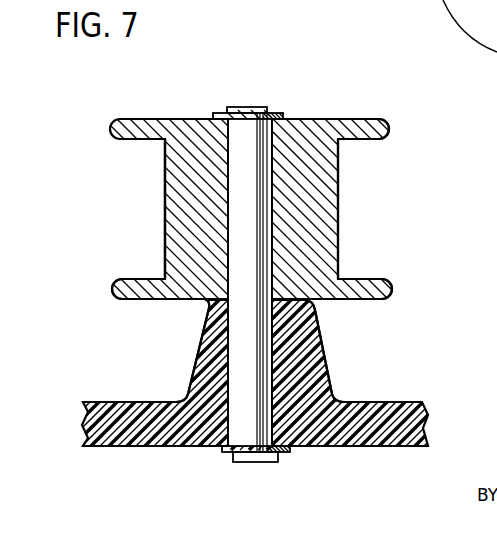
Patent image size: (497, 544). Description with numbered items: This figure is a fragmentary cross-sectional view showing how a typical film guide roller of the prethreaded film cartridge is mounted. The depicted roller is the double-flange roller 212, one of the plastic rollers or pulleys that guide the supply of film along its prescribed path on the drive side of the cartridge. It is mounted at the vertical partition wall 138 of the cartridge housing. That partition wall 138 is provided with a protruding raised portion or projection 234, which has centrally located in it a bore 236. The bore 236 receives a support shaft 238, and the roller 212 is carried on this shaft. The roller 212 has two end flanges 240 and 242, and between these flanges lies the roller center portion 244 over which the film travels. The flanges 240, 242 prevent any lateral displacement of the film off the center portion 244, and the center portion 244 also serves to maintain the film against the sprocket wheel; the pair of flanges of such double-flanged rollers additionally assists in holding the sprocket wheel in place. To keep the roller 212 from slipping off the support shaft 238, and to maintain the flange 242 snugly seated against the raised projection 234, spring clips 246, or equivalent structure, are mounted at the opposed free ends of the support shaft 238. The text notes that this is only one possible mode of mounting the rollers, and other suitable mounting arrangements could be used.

The double-flange roller 212 is at (172, 114).
The support shaft 238 is at (255, 214).
The end flange 240 is at (361, 124).
The end flange 242 is at (133, 288).
The roller center portion 244 is at (166, 215).
The raised projection 234 is at (188, 372).
The bore 236 is at (270, 341).
The spring clips 246 is at (275, 113).
The vertical partition wall 138 is at (394, 409).